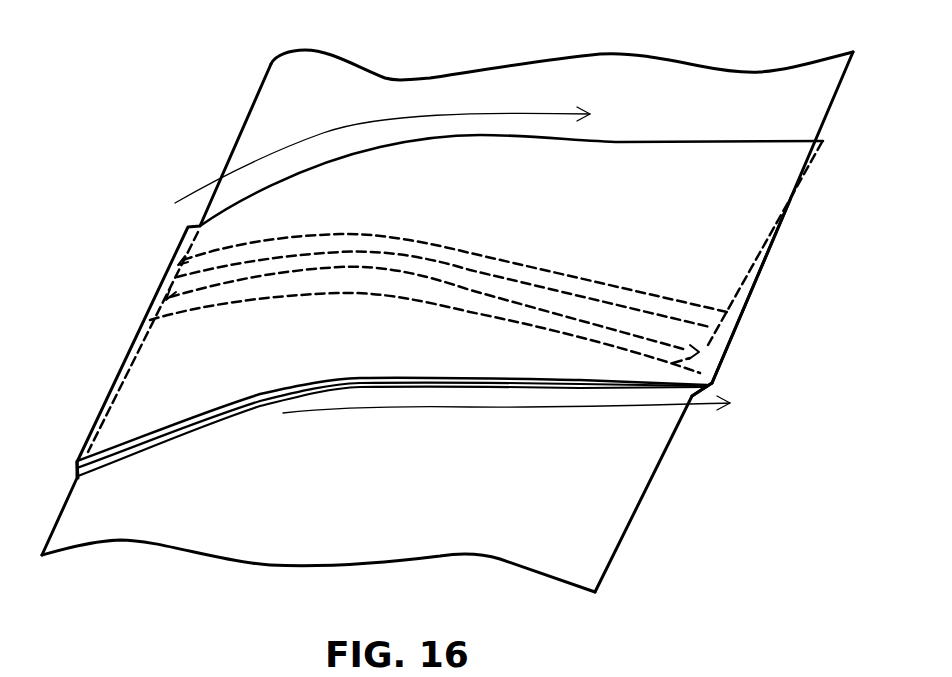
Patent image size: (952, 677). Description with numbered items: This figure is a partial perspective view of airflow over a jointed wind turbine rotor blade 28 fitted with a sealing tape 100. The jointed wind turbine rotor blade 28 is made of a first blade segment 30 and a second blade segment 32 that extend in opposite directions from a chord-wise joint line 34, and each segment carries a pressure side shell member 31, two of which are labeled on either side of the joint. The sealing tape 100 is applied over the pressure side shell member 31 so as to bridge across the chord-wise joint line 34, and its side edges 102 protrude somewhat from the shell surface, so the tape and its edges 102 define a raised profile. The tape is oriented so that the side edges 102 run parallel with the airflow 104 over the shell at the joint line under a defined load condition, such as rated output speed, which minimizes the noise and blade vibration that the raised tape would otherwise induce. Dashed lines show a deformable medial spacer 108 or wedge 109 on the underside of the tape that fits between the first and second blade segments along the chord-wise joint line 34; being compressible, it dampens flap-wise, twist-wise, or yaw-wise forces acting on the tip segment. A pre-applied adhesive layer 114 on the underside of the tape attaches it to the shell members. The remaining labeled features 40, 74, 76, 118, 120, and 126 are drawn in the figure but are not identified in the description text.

The jointed wind turbine rotor blade 28 is at (142, 106).
The first blade segment 30 is at (394, 79).
The pressure side shell member 31 is at (753, 109).
The second blade segment 32 is at (157, 543).
The chord-wise joint line 34 is at (720, 357).
The exterior region 40 is at (915, 183).
The leading edge 74 is at (67, 503).
The trailing edge 76 is at (833, 102).
The sealing tape 100 is at (115, 294).
The side edges 102 is at (670, 140).
The airflow 104 is at (323, 133).
The deformable medial spacer 108 is at (433, 235).
The wedge 109 is at (425, 314).
The pre-applied adhesive layer 114 is at (97, 467).
The layered strip 118 is at (308, 380).
The rib side surface 120 is at (637, 210).
The rib end edge 126 is at (763, 270).